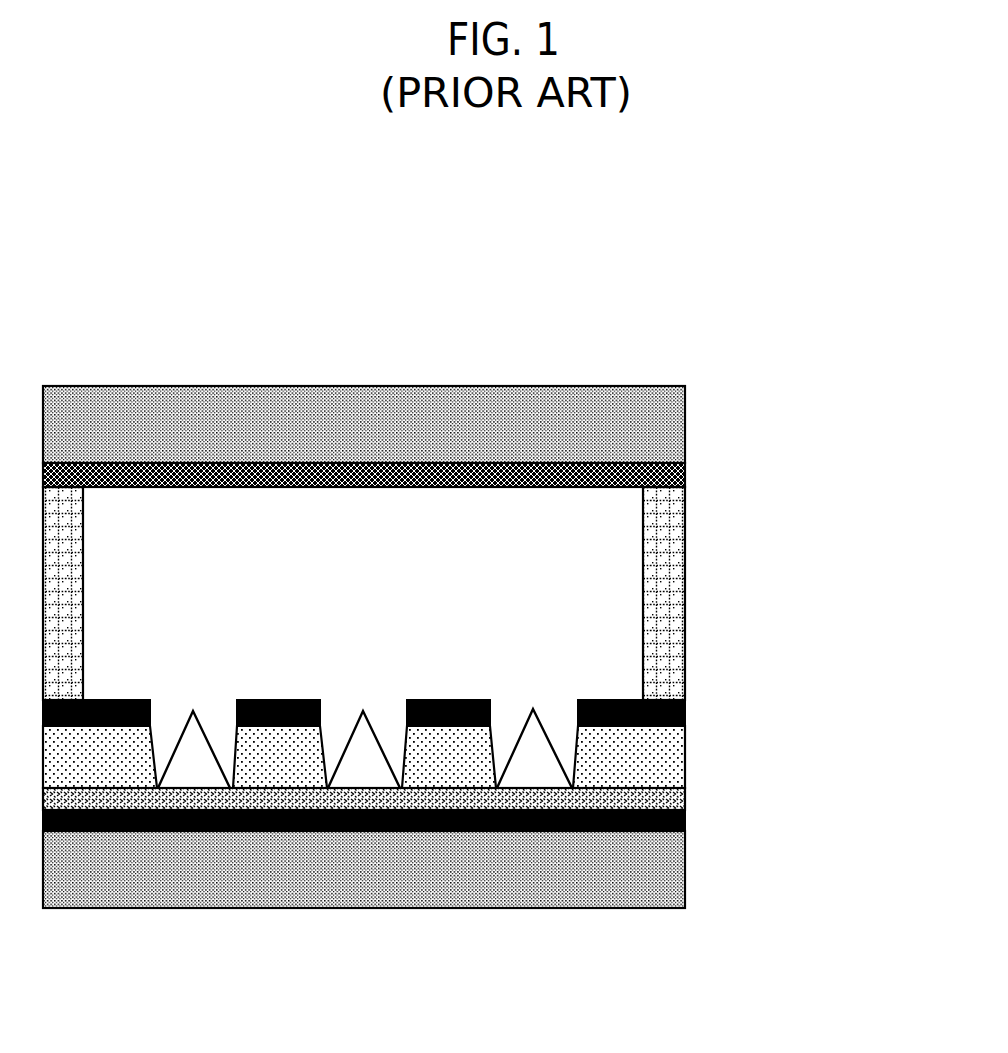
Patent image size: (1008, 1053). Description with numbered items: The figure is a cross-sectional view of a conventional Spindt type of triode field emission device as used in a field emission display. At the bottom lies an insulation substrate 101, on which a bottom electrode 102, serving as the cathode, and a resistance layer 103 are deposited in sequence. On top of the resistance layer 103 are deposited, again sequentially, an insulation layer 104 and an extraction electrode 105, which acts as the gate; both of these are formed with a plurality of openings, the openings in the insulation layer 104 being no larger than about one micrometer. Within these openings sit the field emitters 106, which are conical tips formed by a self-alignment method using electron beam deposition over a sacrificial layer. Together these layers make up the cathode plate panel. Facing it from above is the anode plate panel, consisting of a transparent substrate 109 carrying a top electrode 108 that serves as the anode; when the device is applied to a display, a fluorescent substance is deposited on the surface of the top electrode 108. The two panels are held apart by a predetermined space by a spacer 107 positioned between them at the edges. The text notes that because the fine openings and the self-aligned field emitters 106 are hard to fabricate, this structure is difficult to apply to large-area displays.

The insulation substrate 101 is at (685, 880).
The bottom electrode 102 is at (685, 828).
The resistance layer 103 is at (685, 800).
The insulation layer 104 is at (685, 755).
The extraction electrode 105 is at (685, 712).
The field emitters 106 is at (530, 745).
The spacer 107 is at (685, 580).
The top electrode 108 is at (685, 473).
The transparent substrate 109 is at (685, 412).